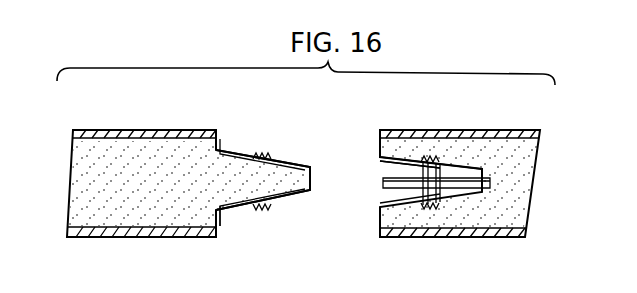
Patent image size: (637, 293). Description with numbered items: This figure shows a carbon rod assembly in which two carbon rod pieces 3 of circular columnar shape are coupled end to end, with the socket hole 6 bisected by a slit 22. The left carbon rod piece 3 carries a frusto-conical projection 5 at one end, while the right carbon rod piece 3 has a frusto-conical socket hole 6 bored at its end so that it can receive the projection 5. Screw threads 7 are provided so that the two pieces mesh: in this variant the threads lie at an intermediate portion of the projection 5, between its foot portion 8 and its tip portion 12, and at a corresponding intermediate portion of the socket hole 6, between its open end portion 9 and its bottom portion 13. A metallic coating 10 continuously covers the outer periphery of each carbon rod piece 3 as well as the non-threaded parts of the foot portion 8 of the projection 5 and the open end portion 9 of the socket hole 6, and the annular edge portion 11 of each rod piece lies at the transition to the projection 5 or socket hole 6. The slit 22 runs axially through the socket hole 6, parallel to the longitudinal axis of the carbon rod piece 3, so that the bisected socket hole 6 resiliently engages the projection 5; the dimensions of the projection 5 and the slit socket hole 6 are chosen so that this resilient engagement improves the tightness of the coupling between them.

The carbon rod piece 3 is at (128, 142).
The projection 5 is at (231, 168).
The socket hole 6 is at (397, 160).
The screw threads 7 is at (264, 153).
The foot portion 8 is at (223, 219).
The open end portion 9 is at (381, 203).
The metallic coating 10 is at (140, 232).
The annular edge portion 11 is at (220, 148).
The tip portion 12 is at (311, 188).
The bottom portion 13 is at (490, 193).
The slit 22 is at (464, 182).